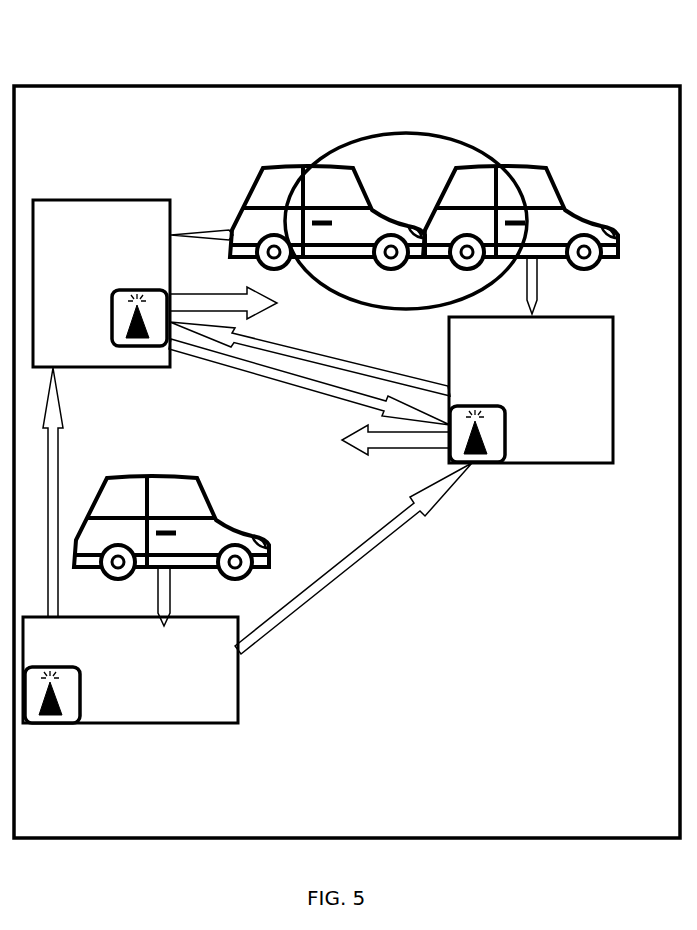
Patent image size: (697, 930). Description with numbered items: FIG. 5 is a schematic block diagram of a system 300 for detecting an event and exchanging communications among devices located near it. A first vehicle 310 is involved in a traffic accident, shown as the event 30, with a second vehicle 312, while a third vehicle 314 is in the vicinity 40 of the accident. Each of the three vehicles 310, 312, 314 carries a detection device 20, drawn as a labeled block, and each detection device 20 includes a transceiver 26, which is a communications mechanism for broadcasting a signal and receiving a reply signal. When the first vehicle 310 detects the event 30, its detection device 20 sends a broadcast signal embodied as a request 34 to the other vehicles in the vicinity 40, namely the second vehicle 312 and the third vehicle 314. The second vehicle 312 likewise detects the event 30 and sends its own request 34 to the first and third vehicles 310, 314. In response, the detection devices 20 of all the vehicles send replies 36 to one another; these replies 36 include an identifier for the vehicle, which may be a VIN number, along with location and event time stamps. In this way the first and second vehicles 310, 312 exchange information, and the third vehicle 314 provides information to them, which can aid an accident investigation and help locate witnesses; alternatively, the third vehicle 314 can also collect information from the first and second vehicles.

The system 300 is at (102, 52).
The vicinity 40 is at (77, 153).
The event 30 is at (405, 163).
The second vehicle 312 is at (226, 171).
The first vehicle 310 is at (548, 162).
The third vehicle 314 is at (130, 432).
The detection device 20 is at (135, 278).
The transceiver 26 is at (489, 466).
The request 34 is at (268, 308).
The reply 36 is at (264, 378).